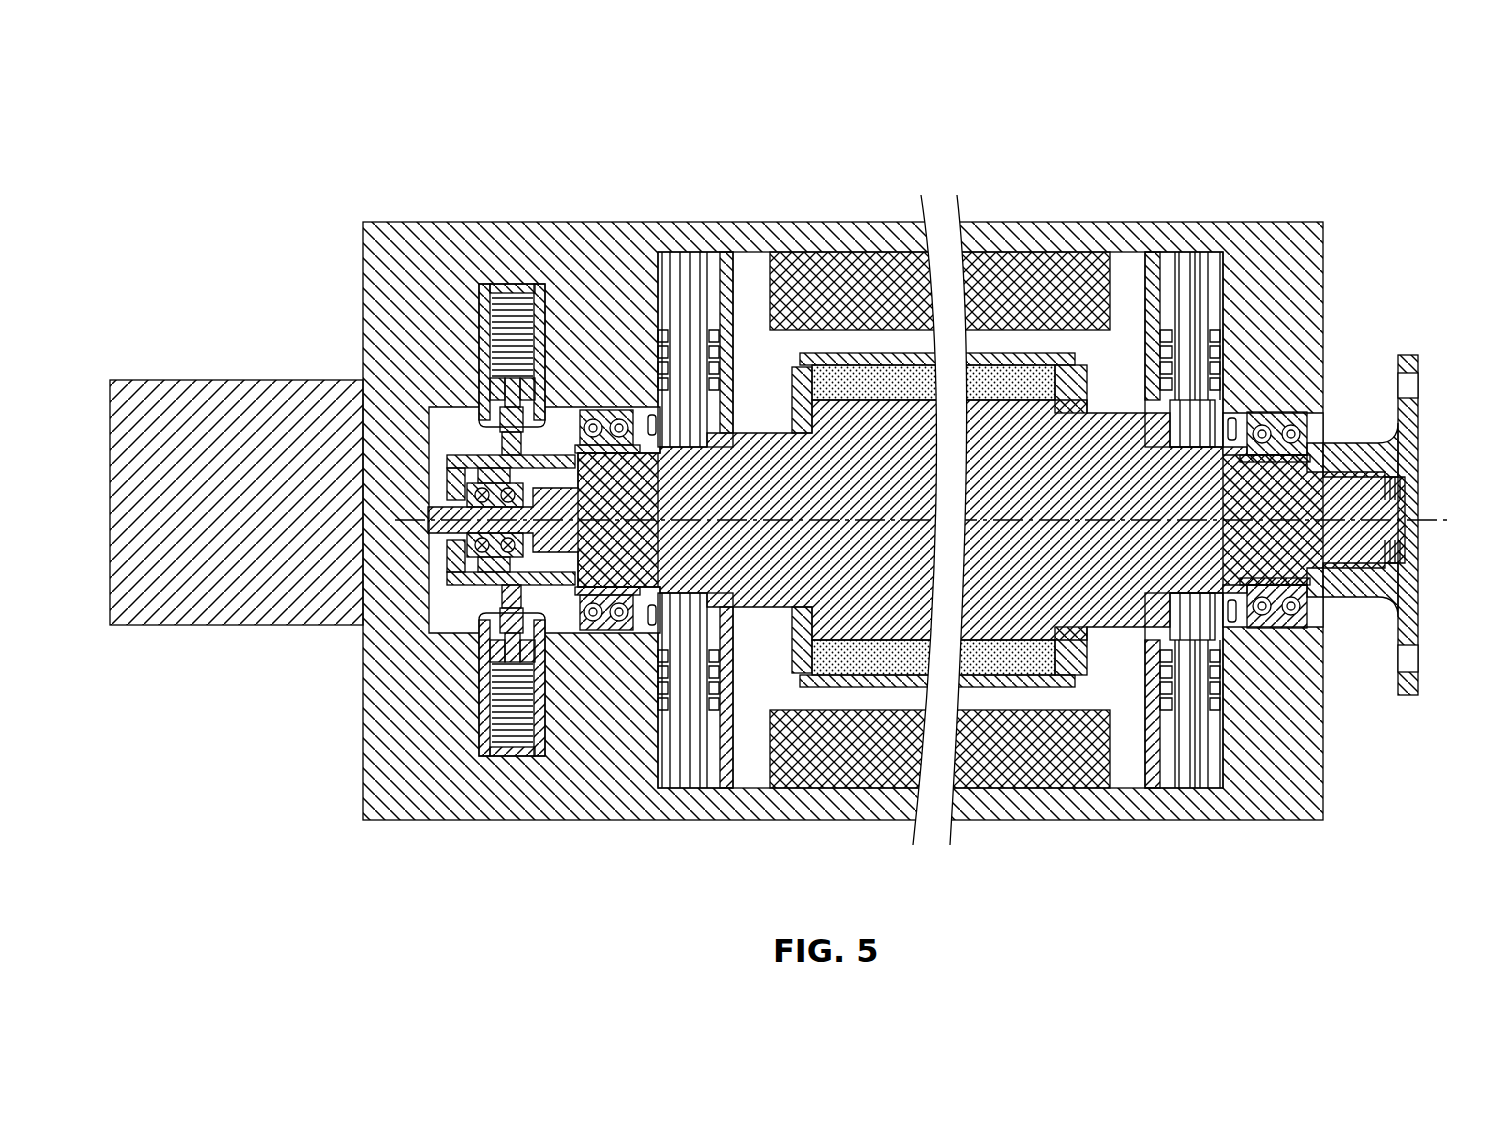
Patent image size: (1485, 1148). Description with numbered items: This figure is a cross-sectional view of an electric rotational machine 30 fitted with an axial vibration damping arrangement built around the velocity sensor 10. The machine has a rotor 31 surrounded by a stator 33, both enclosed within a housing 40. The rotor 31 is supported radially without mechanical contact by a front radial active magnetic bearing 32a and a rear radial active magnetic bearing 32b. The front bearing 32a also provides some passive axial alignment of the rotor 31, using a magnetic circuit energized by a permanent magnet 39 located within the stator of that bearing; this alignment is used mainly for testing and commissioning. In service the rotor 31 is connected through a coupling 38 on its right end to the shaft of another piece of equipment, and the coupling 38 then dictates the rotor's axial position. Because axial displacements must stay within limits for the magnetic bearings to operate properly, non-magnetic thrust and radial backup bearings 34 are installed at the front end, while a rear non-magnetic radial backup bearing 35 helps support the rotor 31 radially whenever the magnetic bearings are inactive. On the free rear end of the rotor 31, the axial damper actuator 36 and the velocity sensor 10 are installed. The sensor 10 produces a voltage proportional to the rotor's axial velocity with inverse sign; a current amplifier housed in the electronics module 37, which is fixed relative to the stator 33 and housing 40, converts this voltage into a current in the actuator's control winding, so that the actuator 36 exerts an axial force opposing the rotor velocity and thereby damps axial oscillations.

The velocity sensor 10 is at (455, 488).
The electric rotational machine 30 is at (390, 85).
The rotor 31 is at (855, 376).
The front radial active magnetic bearing 32a is at (1201, 283).
The rear radial active magnetic bearing 32b is at (700, 287).
The stator 33 is at (992, 775).
The thrust and radial backup bearings 34 is at (1290, 410).
The rear radial backup bearing 35 is at (620, 638).
The axial electromagnetic actuator 36 is at (484, 278).
The electronics module 37 is at (256, 516).
The coupling 38 is at (1434, 420).
The permanent magnet 39 is at (1155, 288).
The housing 40 is at (1324, 790).